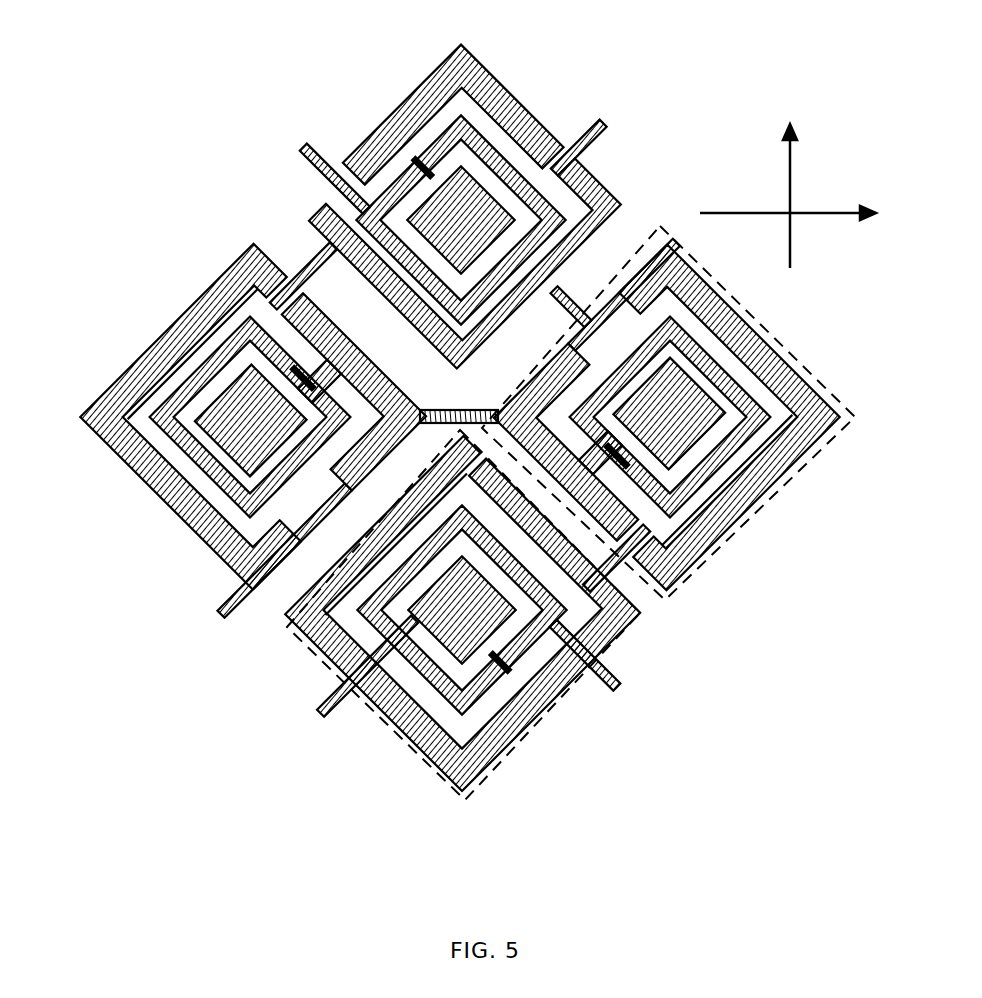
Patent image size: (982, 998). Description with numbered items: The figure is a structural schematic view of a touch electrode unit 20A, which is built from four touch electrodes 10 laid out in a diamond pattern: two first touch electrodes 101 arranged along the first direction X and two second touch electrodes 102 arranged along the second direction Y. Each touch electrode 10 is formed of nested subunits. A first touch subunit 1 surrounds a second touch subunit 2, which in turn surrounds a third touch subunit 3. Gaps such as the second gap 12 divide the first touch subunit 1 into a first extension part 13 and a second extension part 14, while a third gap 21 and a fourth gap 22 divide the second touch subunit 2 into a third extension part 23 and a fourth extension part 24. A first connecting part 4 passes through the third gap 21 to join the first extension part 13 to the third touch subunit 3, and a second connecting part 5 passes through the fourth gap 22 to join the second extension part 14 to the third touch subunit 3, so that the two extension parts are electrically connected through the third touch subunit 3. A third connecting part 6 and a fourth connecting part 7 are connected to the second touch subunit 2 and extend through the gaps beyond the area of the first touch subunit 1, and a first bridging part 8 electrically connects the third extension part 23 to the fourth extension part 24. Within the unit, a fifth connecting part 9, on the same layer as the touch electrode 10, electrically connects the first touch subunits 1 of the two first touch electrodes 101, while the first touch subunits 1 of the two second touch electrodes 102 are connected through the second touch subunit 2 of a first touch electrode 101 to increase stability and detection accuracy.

The touch electrode unit 20A is at (113, 109).
The touch electrode 10 is at (57, 330).
The first touch subunit 1 is at (80, 417).
The second touch subunit 2 is at (185, 455).
The third touch subunit 3 is at (215, 475).
The first connecting part 4 is at (213, 387).
The second connecting part 5 is at (317, 377).
The third connecting part 6 is at (320, 560).
The fourth connecting part 7 is at (300, 277).
The first bridging part 8 is at (320, 378).
The fifth connecting part 9 is at (467, 408).
The second gap 12 is at (303, 297).
The first extension part 13 is at (270, 540).
The second extension part 14 is at (310, 555).
The third gap 21 is at (182, 374).
The fourth gap 22 is at (340, 370).
The third extension part 23 is at (180, 430).
The fourth extension part 24 is at (260, 343).
The first touch electrode 101 is at (765, 505).
The second touch electrode 102 is at (525, 745).